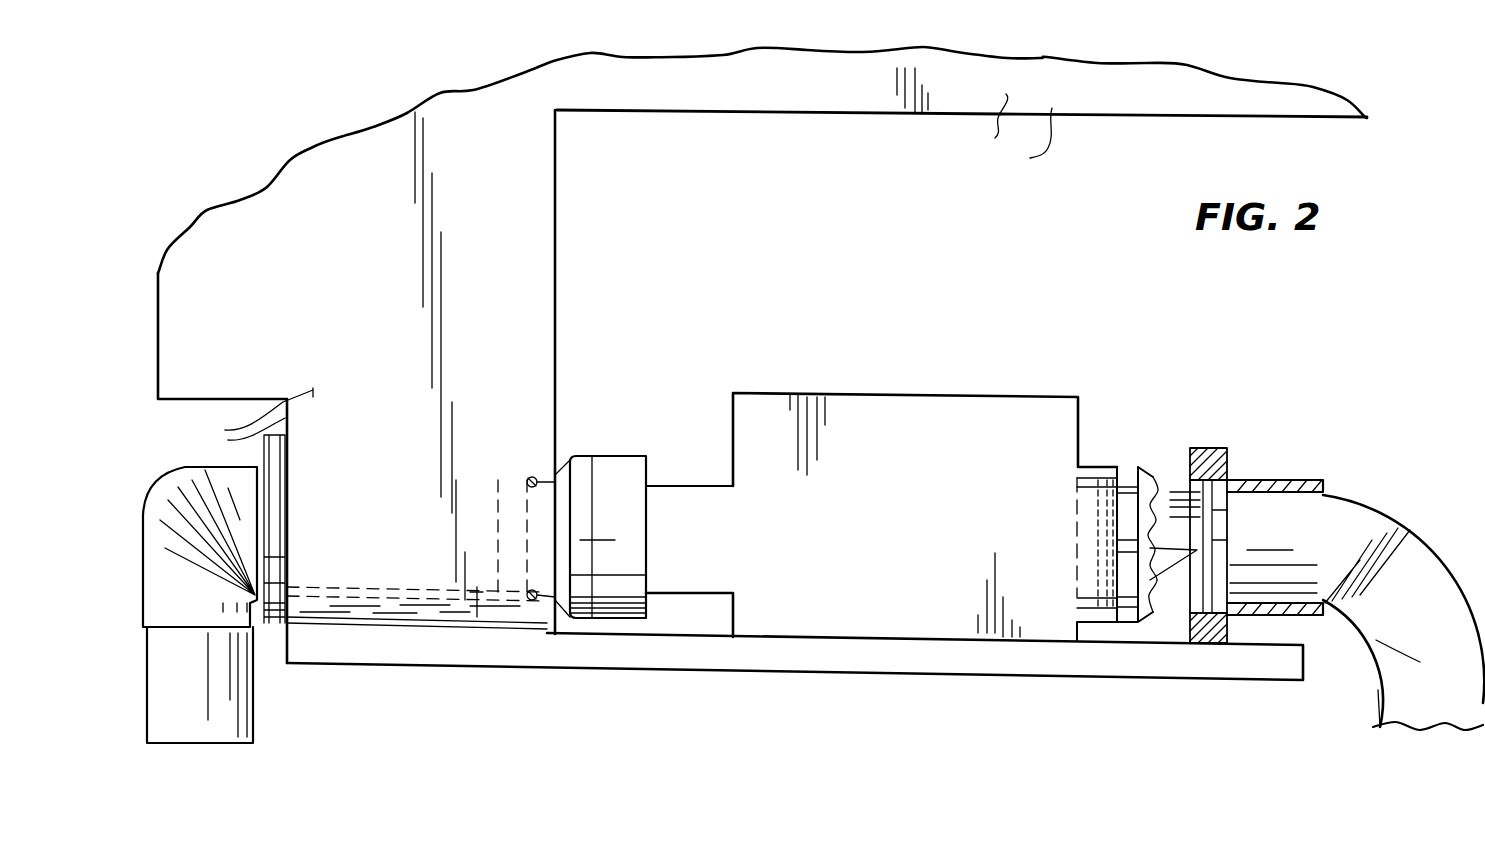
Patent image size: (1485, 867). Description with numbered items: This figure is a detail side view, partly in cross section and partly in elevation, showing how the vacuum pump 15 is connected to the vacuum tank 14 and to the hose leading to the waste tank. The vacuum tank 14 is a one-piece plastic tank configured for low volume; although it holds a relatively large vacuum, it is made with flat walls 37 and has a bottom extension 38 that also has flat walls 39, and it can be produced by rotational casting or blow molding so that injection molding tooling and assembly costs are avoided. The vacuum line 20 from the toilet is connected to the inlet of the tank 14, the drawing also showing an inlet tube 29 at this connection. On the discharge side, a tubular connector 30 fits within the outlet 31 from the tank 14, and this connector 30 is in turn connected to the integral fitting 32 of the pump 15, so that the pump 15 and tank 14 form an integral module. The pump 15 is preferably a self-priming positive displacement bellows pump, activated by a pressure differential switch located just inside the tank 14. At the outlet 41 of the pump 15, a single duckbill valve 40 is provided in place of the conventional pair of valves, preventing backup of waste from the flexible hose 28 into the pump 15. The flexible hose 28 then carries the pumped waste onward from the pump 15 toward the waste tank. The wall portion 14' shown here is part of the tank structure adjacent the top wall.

The vacuum tank 14 is at (778, 147).
The housing wall end portion 14' is at (1183, 142).
The vacuum pump 15 is at (920, 411).
The vacuum line 20 is at (243, 703).
The flexible hose 28 is at (1393, 527).
The inlet tube 29 is at (287, 490).
The tubular connector 30 is at (613, 445).
The outlet 31 is at (525, 480).
The integral fitting 32 is at (685, 500).
The flat walls 37 is at (974, 121).
The bottom extension 38 is at (584, 250).
The flat walls 39 is at (251, 415).
The duckbill valve 40 is at (1165, 545).
The outlet 41 is at (1093, 470).